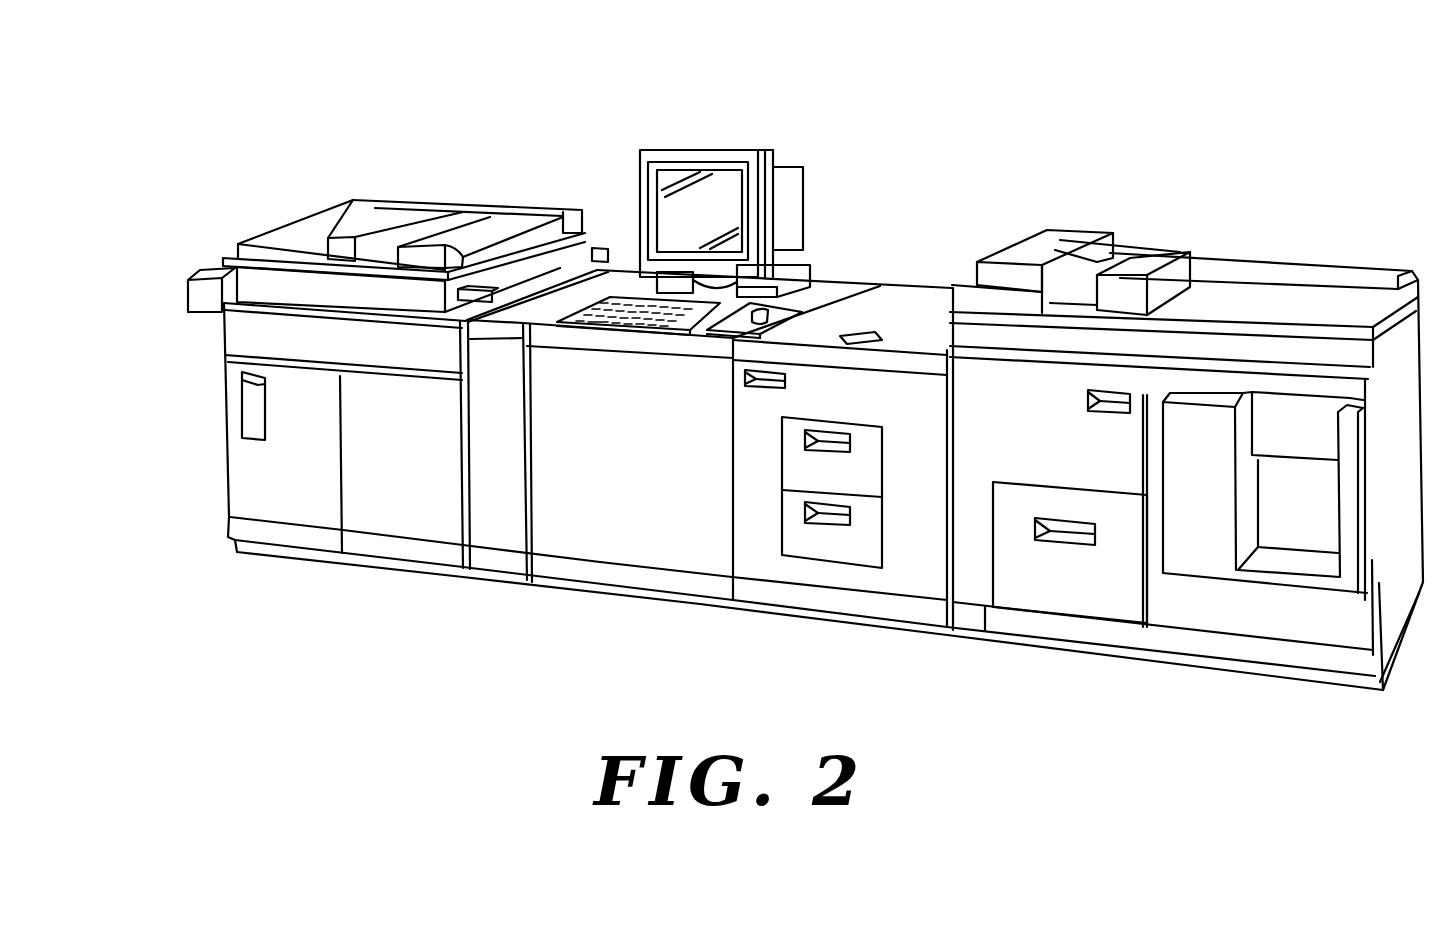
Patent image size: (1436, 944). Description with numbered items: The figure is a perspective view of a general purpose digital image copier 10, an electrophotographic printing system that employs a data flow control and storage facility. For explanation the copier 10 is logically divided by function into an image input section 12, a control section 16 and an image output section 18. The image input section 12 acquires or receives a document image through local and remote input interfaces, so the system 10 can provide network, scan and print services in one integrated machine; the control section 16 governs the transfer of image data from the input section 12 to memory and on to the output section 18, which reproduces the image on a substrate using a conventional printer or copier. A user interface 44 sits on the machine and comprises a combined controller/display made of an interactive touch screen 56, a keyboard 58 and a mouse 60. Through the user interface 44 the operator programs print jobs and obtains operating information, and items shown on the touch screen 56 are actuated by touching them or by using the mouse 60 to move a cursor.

The digital image copier 10 is at (930, 75).
The image input section 12 is at (468, 182).
The control section 16 is at (208, 474).
The image output section 18 is at (935, 213).
The user interface 44 is at (715, 142).
The interactive touch screen 56 is at (685, 205).
The keyboard 58 is at (620, 325).
The mouse 60 is at (732, 330).